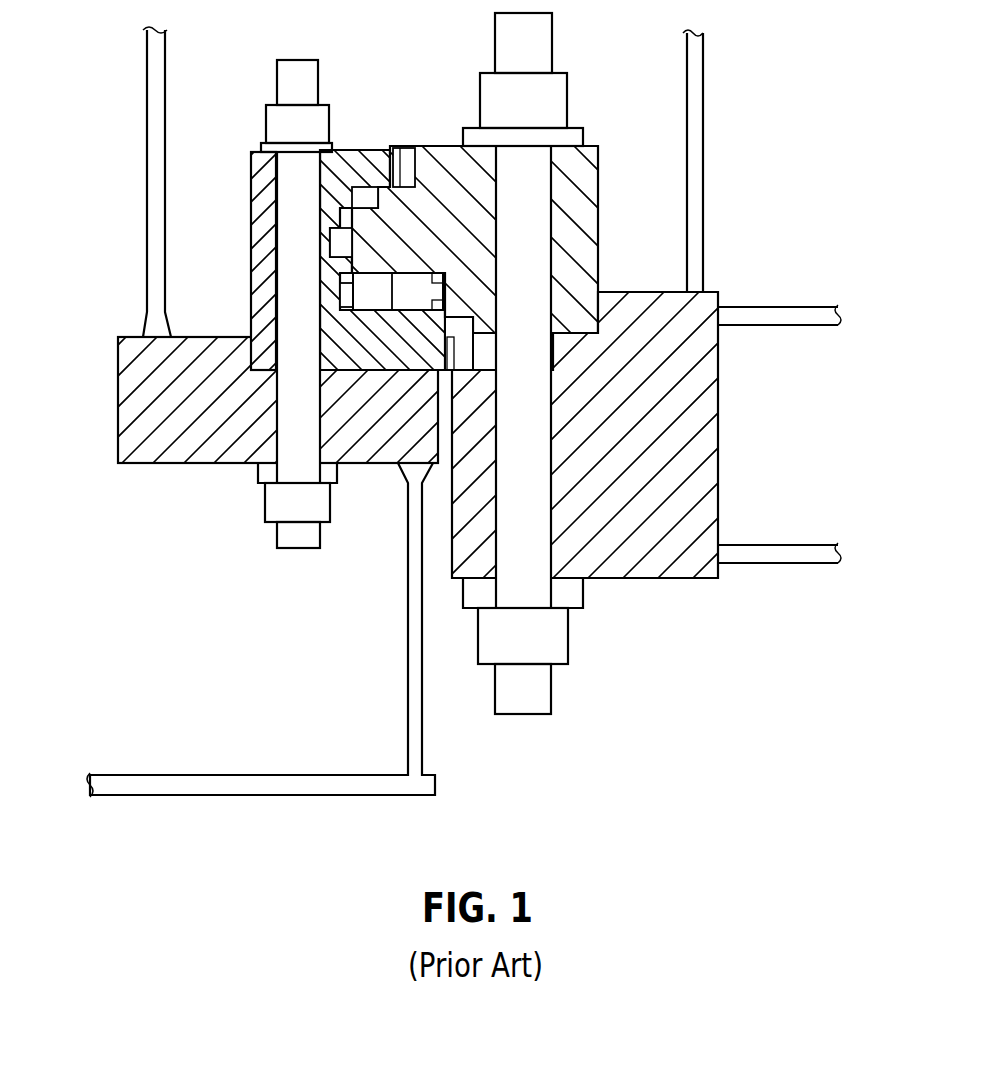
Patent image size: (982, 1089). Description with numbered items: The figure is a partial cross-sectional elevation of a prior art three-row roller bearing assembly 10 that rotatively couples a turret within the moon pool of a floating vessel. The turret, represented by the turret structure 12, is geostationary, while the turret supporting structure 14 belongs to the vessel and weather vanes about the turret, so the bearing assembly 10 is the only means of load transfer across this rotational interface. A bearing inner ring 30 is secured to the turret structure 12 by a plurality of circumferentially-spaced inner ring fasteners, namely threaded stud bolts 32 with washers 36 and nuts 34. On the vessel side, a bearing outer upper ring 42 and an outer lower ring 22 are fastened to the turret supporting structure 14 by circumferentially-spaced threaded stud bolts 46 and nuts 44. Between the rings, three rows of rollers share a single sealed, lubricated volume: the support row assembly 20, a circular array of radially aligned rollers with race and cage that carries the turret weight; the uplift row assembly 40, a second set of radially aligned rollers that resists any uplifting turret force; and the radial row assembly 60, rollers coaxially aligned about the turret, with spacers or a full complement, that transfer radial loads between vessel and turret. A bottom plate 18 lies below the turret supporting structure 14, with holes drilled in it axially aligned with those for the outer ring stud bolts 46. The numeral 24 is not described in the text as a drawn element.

The three-row roller bearing assembly 10 is at (113, 58).
The turret structure 12 is at (712, 468).
The turret supporting structure 14 is at (123, 407).
The bottom plate 18 is at (232, 775).
The support row assembly 20 is at (430, 293).
The outer lower ring 22 is at (255, 295).
The housing pocket 24 is at (266, 220).
The bearing inner ring 30 is at (593, 192).
The threaded stud bolt 32 is at (542, 691).
The nut 34 is at (553, 95).
The washer 36 is at (572, 593).
The uplift row assembly 40 is at (365, 198).
The outer upper ring 42 is at (255, 172).
The nut 44 is at (278, 121).
The threaded stud bolt 46 is at (290, 539).
The radial row assembly 60 is at (343, 248).